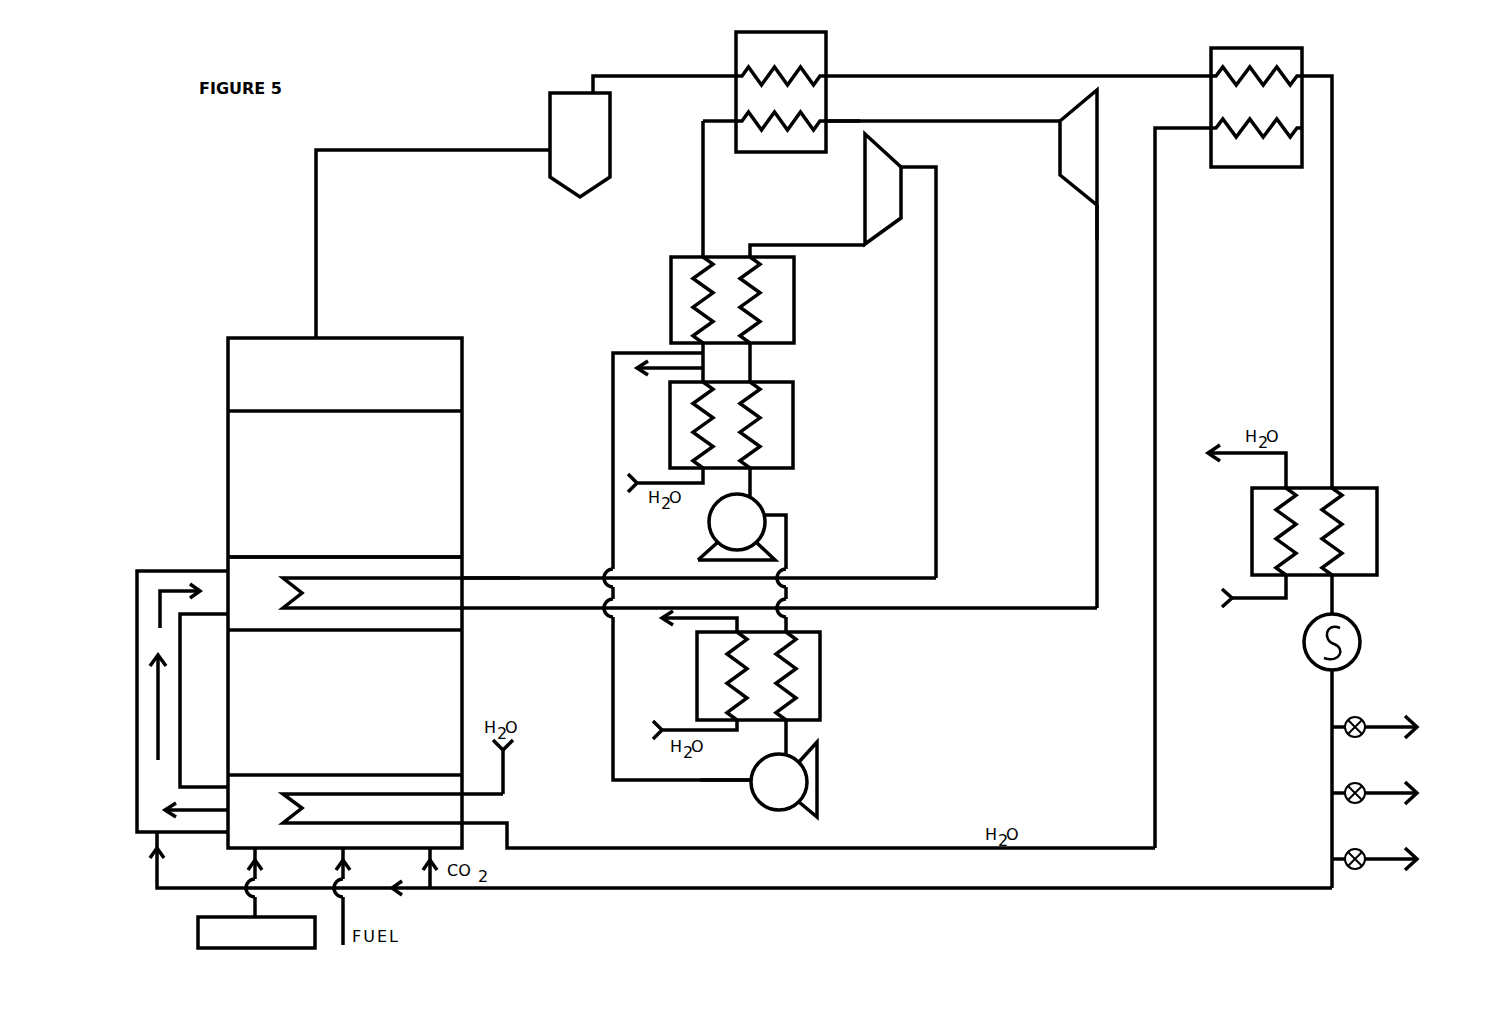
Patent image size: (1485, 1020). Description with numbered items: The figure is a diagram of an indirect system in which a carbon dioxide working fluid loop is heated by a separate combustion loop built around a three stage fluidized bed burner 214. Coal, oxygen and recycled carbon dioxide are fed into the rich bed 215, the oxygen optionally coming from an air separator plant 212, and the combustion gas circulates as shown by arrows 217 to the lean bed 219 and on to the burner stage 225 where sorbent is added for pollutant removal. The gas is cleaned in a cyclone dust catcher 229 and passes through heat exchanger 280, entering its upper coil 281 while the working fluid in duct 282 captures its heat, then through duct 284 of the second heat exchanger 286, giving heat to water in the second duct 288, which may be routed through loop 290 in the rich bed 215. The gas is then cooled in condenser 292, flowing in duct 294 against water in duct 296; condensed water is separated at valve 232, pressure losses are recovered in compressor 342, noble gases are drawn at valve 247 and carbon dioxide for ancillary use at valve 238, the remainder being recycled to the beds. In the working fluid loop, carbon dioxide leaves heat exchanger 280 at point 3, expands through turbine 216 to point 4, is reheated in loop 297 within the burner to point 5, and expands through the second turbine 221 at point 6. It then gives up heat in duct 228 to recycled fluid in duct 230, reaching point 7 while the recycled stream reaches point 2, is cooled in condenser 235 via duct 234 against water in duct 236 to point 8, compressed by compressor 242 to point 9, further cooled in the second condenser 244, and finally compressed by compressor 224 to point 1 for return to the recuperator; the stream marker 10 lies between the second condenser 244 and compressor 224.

The three stage fluidized bed burner 214 is at (357, 338).
The burner stage 225 is at (345, 393).
The lean bed 219 is at (345, 580).
The rich bed 215 is at (345, 798).
The loop 297 is at (306, 590).
The loop 290 is at (306, 805).
The arrows 217 is at (170, 590).
The air separator plant 212 is at (256, 898).
The cyclone dust catcher 229 is at (643, 136).
The heat exchanger 280 is at (807, 153).
The heat exchanger coil 281 is at (793, 66).
The duct 282 is at (788, 122).
The second turbine 221 is at (882, 230).
The turbine 216 is at (1076, 188).
The duct 228 is at (760, 298).
The duct 230 is at (706, 308).
The condenser 235 is at (794, 441).
The duct 234 is at (753, 420).
The duct 236 is at (700, 437).
The compressor 242 is at (709, 526).
The second condenser 244 is at (823, 678).
The compressor 224 is at (786, 787).
The second heat exchanger 286 is at (1231, 168).
The duct 284 is at (1227, 83).
The second duct 288 is at (1263, 131).
The condenser 292 is at (1361, 488).
The duct 294 is at (1339, 518).
The duct 296 is at (1278, 526).
The compressor 342 is at (1304, 648).
The valve 232 is at (1364, 717).
The valve 247 is at (1338, 798).
The valve 238 is at (1361, 870).
The point 1 is at (725, 791).
The point 2 is at (693, 189).
The point 3 is at (843, 108).
The point 4 is at (1090, 222).
The point 5 is at (491, 565).
The point 6 is at (807, 237).
The point 7 is at (761, 362).
The point 8 is at (742, 482).
The point 9 is at (775, 529).
The stream 10 is at (770, 737).